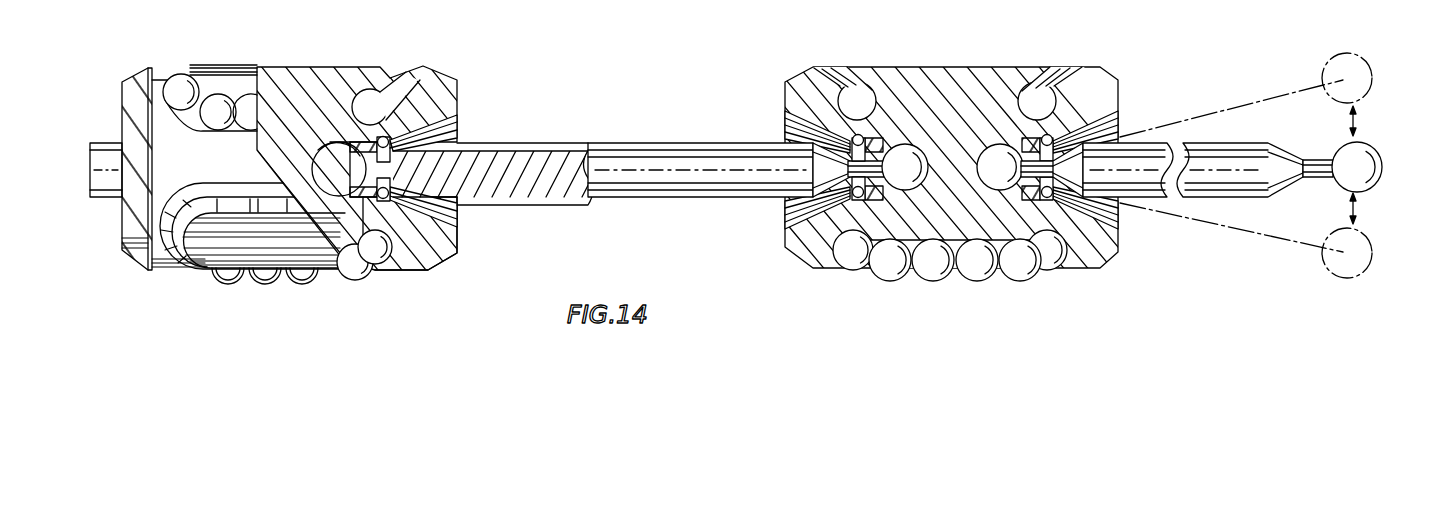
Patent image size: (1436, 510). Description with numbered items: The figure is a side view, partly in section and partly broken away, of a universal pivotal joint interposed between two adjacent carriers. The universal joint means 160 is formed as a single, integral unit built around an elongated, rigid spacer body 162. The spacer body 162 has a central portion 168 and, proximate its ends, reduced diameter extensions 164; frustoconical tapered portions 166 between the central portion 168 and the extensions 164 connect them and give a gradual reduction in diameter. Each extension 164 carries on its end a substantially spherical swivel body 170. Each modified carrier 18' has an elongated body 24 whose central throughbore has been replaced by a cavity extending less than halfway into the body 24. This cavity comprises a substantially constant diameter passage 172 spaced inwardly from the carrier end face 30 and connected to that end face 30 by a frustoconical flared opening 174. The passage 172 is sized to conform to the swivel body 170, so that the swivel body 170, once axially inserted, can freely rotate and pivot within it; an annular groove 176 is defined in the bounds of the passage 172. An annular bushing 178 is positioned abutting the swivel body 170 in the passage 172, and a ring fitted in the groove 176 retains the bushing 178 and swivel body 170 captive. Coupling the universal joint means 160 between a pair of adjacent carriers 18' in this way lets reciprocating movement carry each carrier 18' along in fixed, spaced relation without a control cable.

The modified carrier 18' is at (613, 200).
The elongated body 24 is at (418, 263).
The end face 30 is at (458, 238).
The universal joint means 160 is at (613, 120).
The spacer body 162 is at (657, 200).
The reduced diameter extensions 164 is at (442, 120).
The shaft section 166 is at (426, 165).
The central portion 168 is at (658, 143).
The swivel body 170 is at (330, 172).
The passage 172 is at (331, 141).
The flared opening 174 is at (458, 118).
The annular groove 176 is at (384, 136).
The annular bushing 178 is at (364, 196).